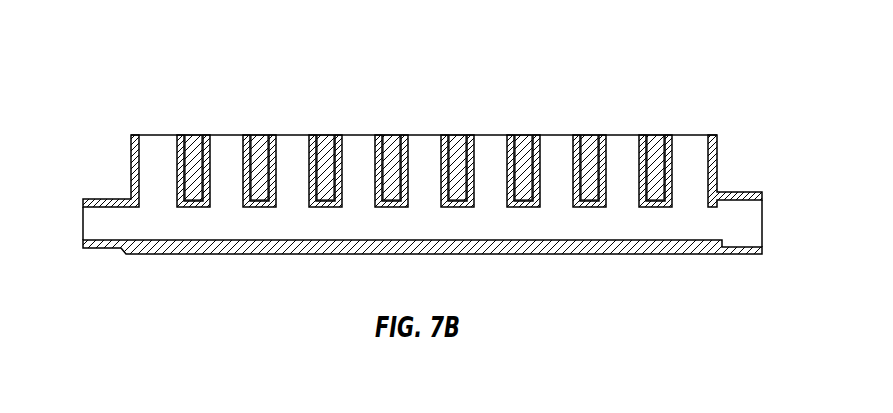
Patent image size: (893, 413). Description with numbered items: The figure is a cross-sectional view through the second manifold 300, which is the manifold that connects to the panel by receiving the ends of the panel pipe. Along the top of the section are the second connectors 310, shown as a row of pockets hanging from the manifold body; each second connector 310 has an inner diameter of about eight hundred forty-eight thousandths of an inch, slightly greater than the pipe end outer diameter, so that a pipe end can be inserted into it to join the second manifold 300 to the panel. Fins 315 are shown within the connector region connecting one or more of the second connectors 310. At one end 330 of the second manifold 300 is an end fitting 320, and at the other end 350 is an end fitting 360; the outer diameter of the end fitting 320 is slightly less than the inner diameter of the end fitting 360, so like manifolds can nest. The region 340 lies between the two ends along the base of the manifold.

The second manifold 300 is at (246, 104).
The second connectors 310 is at (717, 160).
The fins 315 is at (522, 153).
The end fitting 320 is at (102, 248).
The one end 330 is at (140, 255).
The central base plate region 340 is at (415, 255).
The other end 350 is at (650, 255).
The end fitting 360 is at (737, 254).